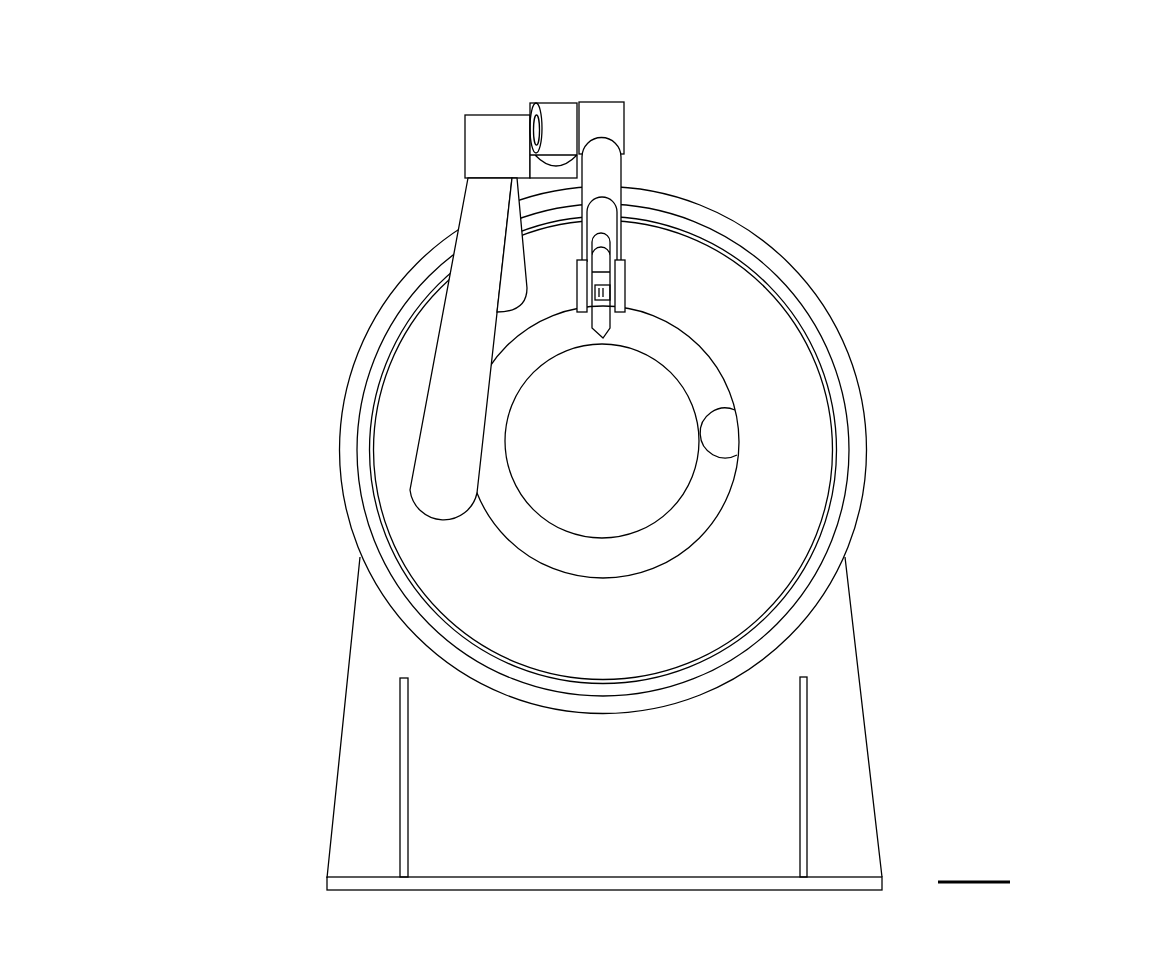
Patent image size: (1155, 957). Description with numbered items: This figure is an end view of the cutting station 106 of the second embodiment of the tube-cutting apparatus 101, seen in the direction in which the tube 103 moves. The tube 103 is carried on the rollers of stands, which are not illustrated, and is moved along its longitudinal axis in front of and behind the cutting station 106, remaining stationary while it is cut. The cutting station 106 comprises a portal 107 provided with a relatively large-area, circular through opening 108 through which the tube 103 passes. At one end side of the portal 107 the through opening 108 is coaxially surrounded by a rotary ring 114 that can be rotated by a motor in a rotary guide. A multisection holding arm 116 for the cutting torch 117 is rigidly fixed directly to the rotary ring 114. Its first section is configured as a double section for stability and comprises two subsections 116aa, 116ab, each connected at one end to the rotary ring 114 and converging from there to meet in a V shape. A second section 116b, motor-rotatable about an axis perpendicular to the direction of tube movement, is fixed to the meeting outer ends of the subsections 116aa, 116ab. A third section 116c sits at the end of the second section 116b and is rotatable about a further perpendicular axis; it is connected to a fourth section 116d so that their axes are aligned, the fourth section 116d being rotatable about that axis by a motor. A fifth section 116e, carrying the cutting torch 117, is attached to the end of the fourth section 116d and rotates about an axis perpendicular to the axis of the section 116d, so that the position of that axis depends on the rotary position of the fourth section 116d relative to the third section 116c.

The apparatus 101 is at (203, 213).
The tube 103 is at (597, 556).
The cutting station 106 is at (911, 305).
The portal 107 is at (838, 667).
The through opening 108 is at (737, 456).
The rotary ring 114 is at (748, 313).
The holding arm 116 is at (430, 464).
The subsection 116aa is at (517, 270).
The subsection 116ab is at (438, 408).
The second section 116b is at (553, 160).
The third section 116c is at (603, 183).
The fourth section 116d is at (610, 222).
The fifth section 116e is at (626, 314).
The cutting torch 117 is at (598, 333).